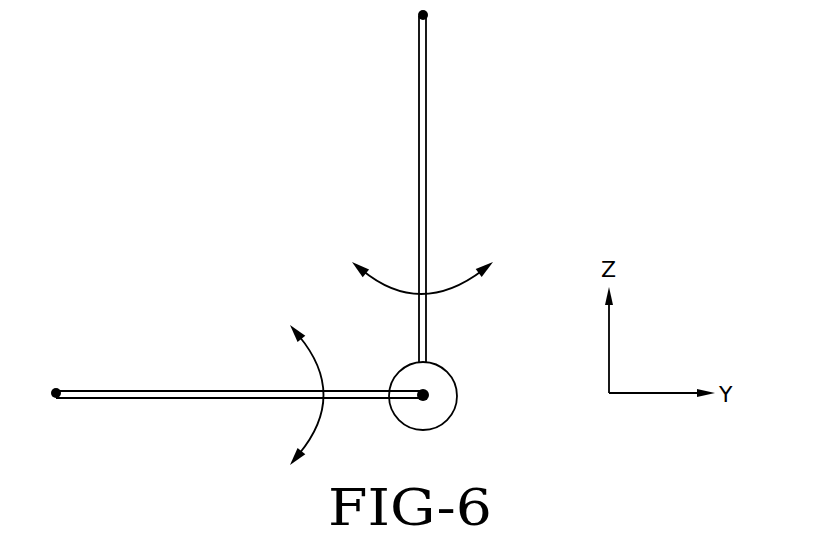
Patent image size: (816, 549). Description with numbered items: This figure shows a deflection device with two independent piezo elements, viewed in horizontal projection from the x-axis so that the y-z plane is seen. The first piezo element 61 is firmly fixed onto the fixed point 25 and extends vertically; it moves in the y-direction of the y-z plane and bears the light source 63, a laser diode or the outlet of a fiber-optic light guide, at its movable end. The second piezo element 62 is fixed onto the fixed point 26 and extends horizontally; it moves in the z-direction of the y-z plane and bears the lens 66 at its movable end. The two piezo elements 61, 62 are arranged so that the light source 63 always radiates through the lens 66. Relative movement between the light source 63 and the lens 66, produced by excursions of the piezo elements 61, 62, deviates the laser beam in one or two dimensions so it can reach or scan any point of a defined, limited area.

The fixed point 25 is at (426, 18).
The fixed point 26 is at (58, 392).
The first piezo element 61 is at (426, 170).
The second piezo element 62 is at (162, 398).
The light source 63 is at (428, 400).
The lens 66 is at (448, 370).